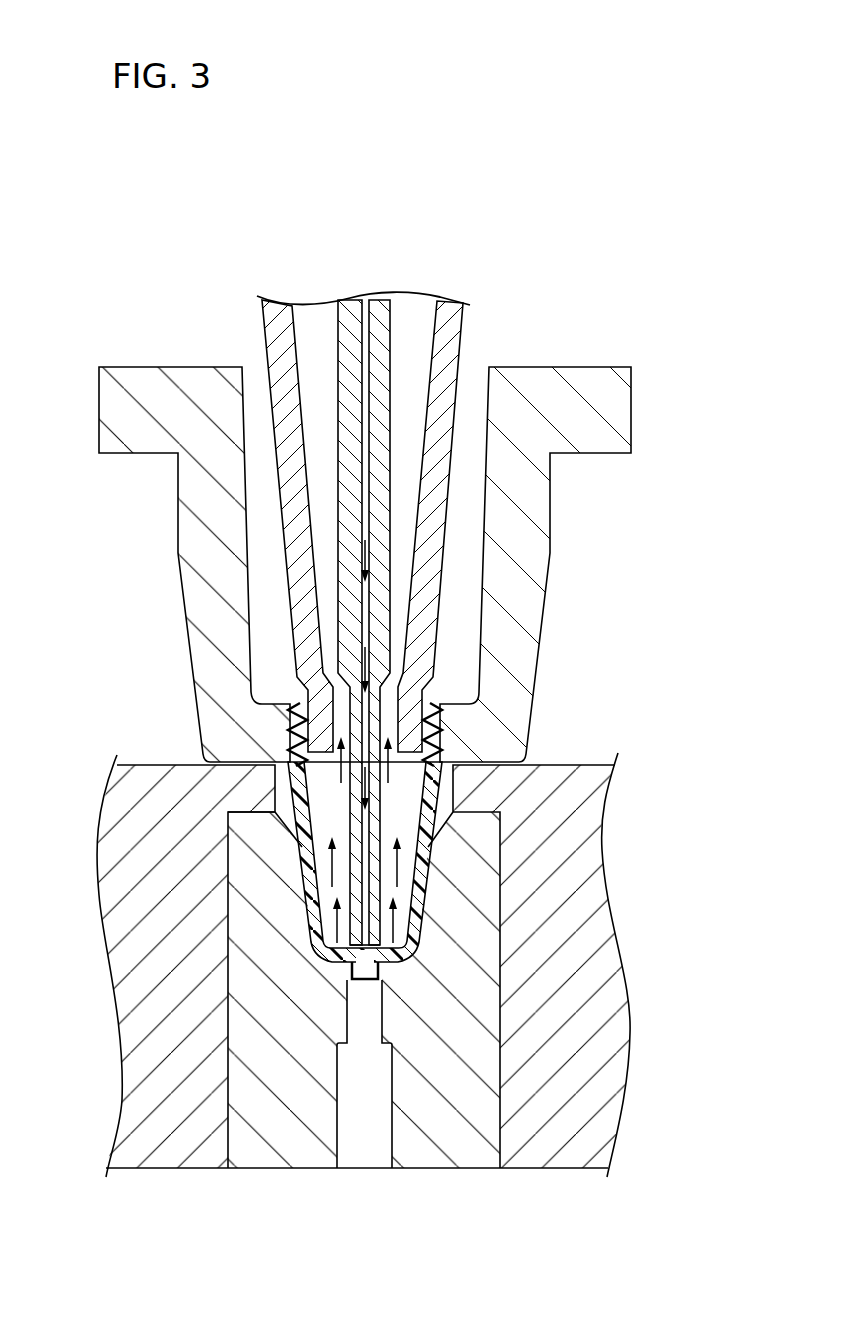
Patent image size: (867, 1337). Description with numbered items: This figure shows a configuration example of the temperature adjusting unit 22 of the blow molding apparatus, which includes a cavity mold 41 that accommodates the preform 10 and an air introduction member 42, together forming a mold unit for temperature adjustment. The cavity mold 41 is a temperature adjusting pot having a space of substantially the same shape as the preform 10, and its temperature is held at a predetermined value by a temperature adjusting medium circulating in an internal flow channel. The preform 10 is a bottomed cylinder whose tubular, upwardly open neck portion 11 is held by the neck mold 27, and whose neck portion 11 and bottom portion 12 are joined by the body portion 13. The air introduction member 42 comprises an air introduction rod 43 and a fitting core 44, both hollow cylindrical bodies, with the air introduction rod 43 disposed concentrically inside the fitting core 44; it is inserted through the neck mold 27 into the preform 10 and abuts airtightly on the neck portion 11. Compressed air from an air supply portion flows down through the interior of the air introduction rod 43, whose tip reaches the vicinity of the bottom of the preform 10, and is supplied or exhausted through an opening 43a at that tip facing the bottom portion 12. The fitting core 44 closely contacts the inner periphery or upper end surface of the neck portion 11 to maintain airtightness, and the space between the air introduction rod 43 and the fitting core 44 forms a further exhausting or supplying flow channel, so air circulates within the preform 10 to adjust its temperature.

The temperature adjusting unit 22 is at (373, 586).
The fitting core 44 is at (268, 338).
The air introduction member 42 is at (470, 327).
The neck mold 27 is at (178, 535).
The neck portion 11 is at (433, 720).
The air introduction rod 43 is at (381, 800).
The preform 10 is at (447, 845).
The body portion 13 is at (302, 850).
The opening 43a is at (367, 958).
The bottom portion 12 is at (330, 965).
The cavity mold 41 is at (502, 1105).